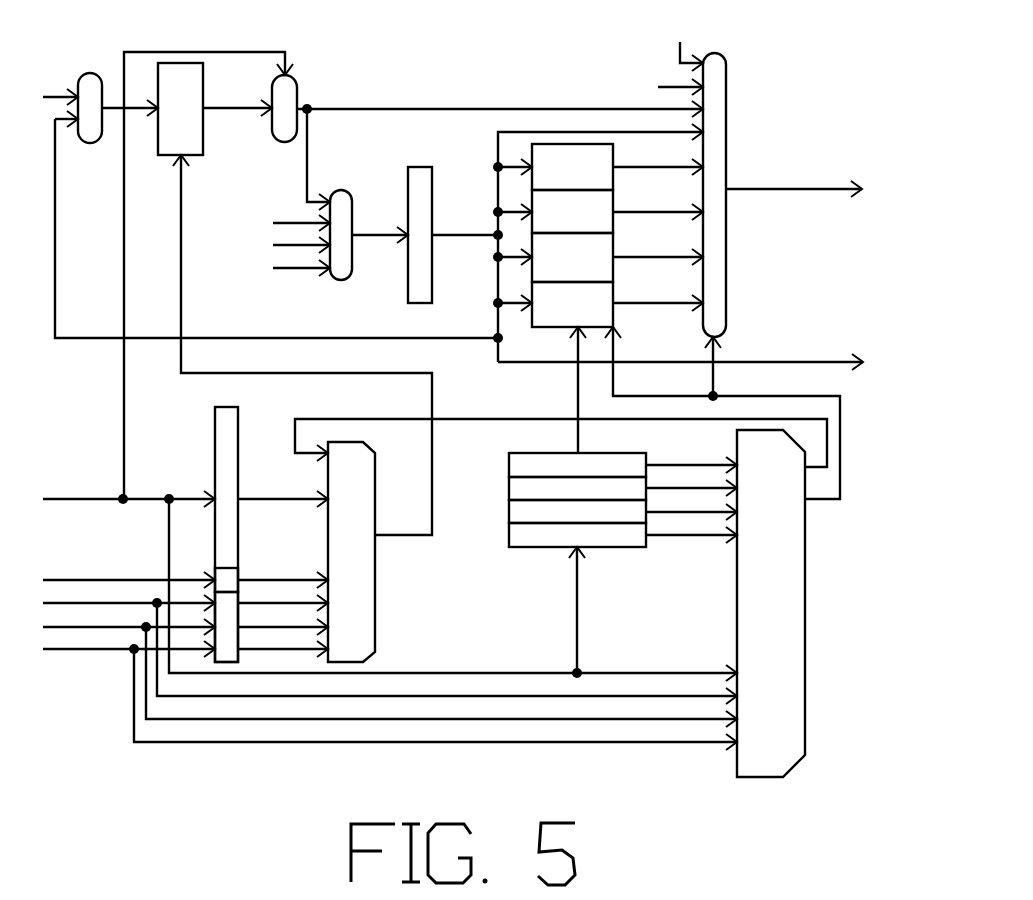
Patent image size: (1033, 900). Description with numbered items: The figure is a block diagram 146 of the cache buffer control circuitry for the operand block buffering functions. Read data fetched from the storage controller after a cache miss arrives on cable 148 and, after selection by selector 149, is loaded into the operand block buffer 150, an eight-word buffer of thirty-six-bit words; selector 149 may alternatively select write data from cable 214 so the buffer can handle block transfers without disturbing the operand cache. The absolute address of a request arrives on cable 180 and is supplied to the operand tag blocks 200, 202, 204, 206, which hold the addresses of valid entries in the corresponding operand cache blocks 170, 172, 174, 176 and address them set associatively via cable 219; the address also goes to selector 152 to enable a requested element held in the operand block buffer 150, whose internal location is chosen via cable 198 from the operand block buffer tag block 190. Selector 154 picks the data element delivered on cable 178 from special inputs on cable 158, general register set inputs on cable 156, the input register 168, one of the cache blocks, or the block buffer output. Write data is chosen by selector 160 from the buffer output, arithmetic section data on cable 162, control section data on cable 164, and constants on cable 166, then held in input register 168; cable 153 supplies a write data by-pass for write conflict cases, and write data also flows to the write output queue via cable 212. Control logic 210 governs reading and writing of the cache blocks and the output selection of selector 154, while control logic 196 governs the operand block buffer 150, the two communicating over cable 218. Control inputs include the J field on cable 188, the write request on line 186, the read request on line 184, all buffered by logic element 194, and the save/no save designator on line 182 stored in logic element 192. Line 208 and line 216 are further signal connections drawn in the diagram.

The block diagram 146 is at (475, 46).
The cable 148 is at (52, 95).
The selector 149 is at (84, 130).
The operand block buffer 150 is at (163, 145).
The selector 152 is at (295, 87).
The cable 153 is at (530, 132).
The selector 154 is at (718, 124).
The cable 156 is at (662, 87).
The cable 158 is at (680, 53).
The selector 160 is at (343, 202).
The cable 162 is at (303, 222).
The cable 164 is at (300, 245).
The cable 166 is at (303, 268).
The input register 168 is at (417, 175).
The operand cache block 170 is at (603, 155).
The operand cache block 172 is at (605, 200).
The operand cache block 174 is at (603, 245).
The operand cache block 176 is at (605, 290).
The cable 178 is at (805, 187).
The cable 180 is at (60, 498).
The line 182 is at (72, 580).
The line 184 is at (73, 603).
The line 186 is at (73, 627).
The cable 188 is at (73, 649).
The operand block buffer tag block 190 is at (233, 415).
The logic element 192 is at (230, 577).
The logic element 194 is at (230, 655).
The control logic 196 is at (362, 593).
The cable 198 is at (330, 373).
The operand tag block 200 is at (520, 465).
The operand tag block 202 is at (517, 488).
The operand tag block 204 is at (517, 512).
The operand tag block 206 is at (517, 535).
The signal line 208 is at (578, 605).
The control logic 210 is at (797, 542).
The cable 212 is at (777, 360).
The cable 214 is at (57, 200).
The signal line 216 is at (125, 435).
The cable 218 is at (510, 417).
The cable 219 is at (580, 390).